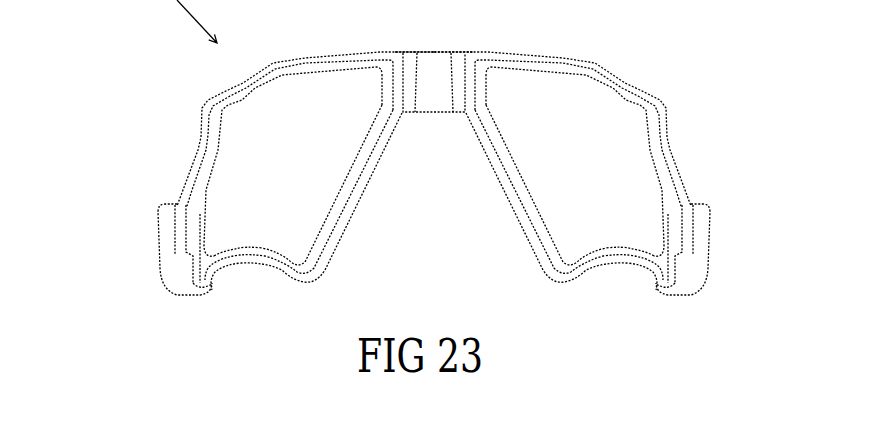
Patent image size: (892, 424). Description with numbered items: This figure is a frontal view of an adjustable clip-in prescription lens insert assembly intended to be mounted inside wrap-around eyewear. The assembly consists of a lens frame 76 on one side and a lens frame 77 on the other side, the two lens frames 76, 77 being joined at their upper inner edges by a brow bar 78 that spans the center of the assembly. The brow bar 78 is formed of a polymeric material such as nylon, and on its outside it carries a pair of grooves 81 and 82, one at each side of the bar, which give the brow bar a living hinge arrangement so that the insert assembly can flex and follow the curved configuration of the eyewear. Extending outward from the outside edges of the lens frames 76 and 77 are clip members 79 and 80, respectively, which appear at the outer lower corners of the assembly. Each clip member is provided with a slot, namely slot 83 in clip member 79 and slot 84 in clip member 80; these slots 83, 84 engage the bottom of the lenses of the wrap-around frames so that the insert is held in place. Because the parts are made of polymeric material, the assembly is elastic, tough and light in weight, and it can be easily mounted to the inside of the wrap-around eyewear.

The lens frame 76 is at (270, 264).
The lens frame 77 is at (592, 270).
The brow bar 78 is at (474, 44).
The clip member 79 is at (143, 278).
The clip member 80 is at (714, 297).
The groove 81 is at (408, 113).
The groove 82 is at (458, 113).
The slot 83 is at (175, 232).
The slot 84 is at (688, 238).